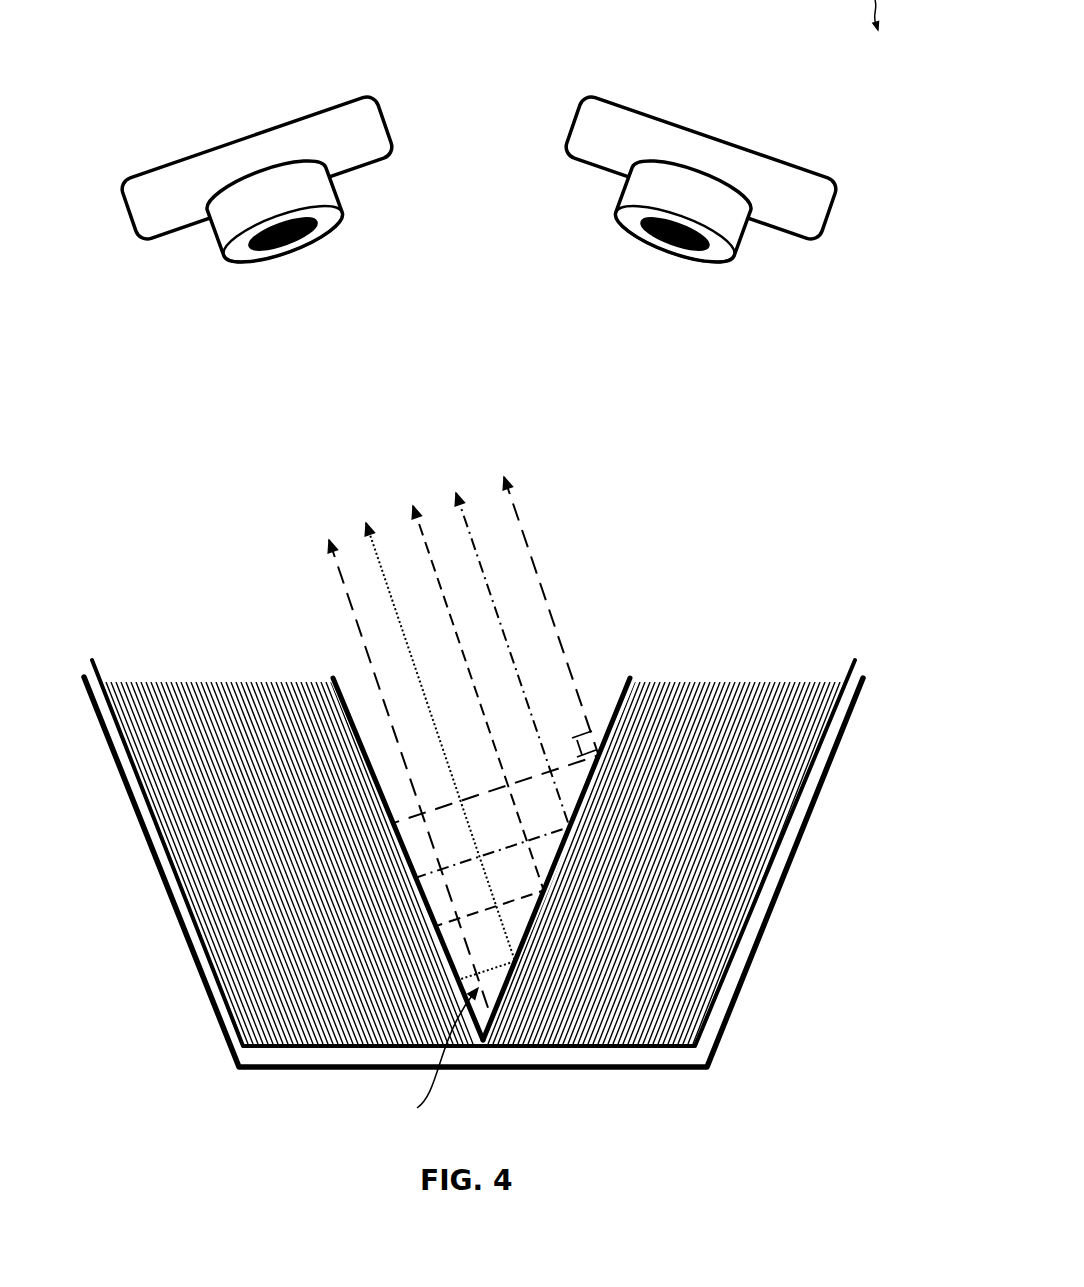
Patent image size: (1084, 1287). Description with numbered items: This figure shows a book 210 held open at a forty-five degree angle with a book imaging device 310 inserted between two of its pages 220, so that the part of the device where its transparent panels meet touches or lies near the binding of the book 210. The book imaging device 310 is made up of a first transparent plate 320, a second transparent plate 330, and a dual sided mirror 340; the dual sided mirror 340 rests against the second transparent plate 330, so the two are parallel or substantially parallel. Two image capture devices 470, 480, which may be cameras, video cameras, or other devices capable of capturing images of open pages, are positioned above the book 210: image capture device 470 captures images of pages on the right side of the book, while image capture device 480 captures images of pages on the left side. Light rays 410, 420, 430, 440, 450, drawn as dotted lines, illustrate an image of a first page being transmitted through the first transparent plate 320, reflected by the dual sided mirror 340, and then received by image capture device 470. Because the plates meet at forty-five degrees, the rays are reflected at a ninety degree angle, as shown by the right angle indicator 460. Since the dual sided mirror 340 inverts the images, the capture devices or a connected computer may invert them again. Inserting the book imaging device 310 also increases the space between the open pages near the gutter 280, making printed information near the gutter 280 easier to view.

The book 210 is at (473, 824).
The pages 220 is at (243, 684).
The gutter 280 is at (428, 1055).
The book imaging device 310 is at (473, 810).
The first transparent plate 320 is at (335, 677).
The second transparent plate 330 is at (633, 678).
The dual sided mirror 340 is at (628, 677).
The light ray 410 is at (340, 573).
The light ray 420 is at (386, 585).
The light ray 430 is at (435, 570).
The light ray 440 is at (474, 543).
The light ray 450 is at (519, 525).
The right angle indicator 460 is at (574, 735).
The image capture device 470 is at (367, 100).
The image capture device 480 is at (595, 100).